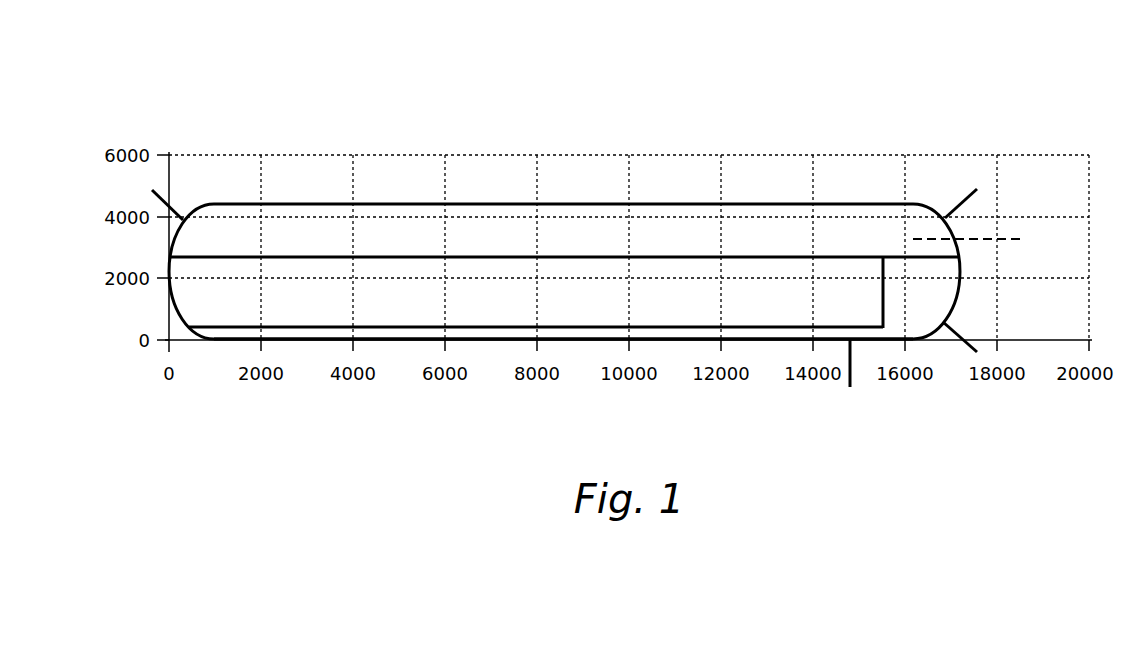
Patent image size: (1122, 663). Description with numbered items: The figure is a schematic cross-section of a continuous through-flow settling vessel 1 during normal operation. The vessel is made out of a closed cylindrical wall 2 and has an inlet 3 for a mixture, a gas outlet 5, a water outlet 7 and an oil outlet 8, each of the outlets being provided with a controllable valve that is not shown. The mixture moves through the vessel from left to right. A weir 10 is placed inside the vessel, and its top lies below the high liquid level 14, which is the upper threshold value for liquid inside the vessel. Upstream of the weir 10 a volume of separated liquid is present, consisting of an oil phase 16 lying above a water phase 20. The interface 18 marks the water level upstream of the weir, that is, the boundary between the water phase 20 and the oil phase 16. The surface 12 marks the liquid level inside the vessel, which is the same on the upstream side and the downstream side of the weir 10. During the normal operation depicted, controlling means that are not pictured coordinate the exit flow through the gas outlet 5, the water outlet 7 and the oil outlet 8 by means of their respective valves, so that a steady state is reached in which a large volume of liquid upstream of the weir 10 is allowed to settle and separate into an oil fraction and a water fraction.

The continuous through-flow settling vessel 1 is at (1029, 112).
The closed cylindrical wall 2 is at (565, 203).
The inlet 3 is at (181, 213).
The gas outlet 5 is at (953, 210).
The water outlet 7 is at (852, 380).
The oil outlet 8 is at (958, 340).
The weir 10 is at (881, 296).
The surface 12 is at (649, 254).
The high liquid level 14 is at (1017, 238).
The oil phase 16 is at (592, 310).
The interface 18 is at (649, 324).
The water phase 20 is at (675, 334).